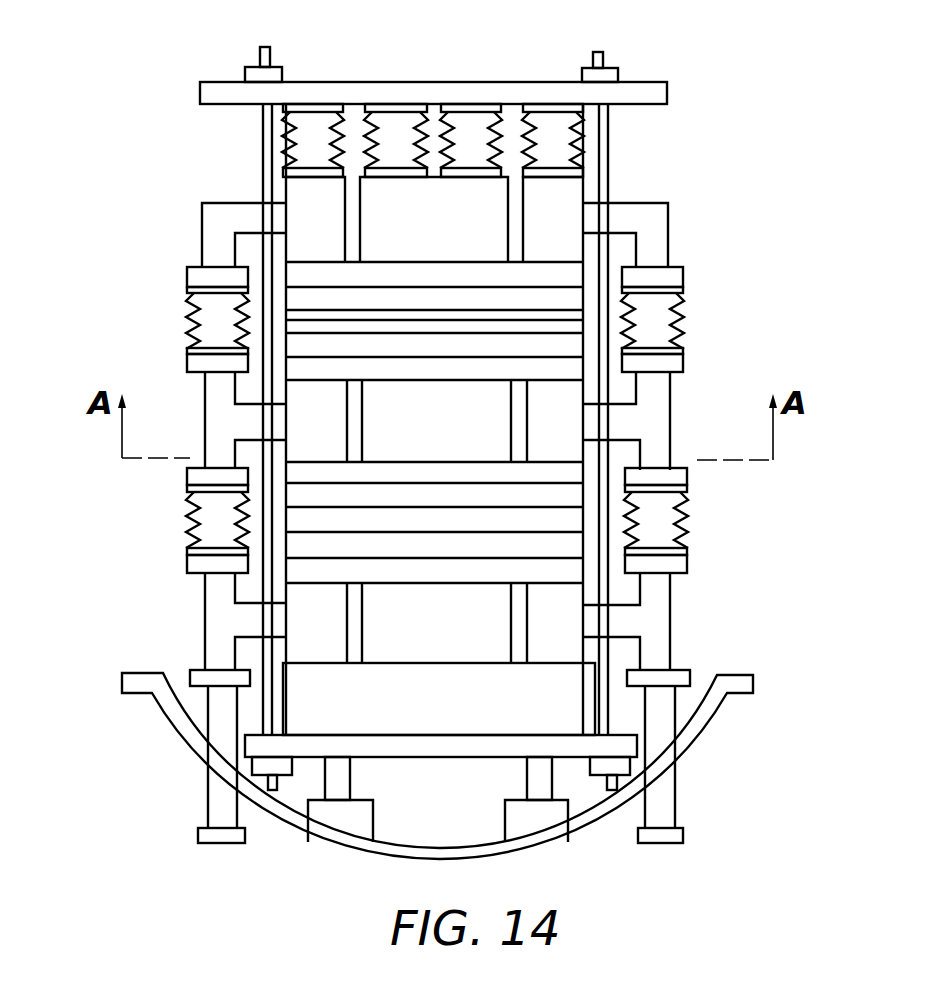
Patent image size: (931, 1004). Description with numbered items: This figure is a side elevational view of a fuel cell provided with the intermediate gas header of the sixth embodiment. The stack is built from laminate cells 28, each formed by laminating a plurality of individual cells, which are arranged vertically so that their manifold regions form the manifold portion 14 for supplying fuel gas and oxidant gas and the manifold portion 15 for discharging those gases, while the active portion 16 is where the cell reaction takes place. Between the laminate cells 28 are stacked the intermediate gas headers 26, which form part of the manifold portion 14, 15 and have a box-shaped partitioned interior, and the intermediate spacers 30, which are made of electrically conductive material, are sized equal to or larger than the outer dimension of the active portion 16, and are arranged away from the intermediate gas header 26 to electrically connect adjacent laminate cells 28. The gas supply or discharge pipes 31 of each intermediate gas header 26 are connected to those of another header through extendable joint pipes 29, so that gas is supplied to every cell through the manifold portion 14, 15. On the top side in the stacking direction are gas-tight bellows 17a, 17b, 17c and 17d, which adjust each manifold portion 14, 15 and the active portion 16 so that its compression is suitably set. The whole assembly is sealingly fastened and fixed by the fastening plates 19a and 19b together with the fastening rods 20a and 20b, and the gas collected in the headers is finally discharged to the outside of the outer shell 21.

The manifold portion 14 is at (365, 315).
The manifold portion 15 is at (562, 325).
The active portion 16 is at (442, 302).
The gas-tight bellows 17a is at (395, 125).
The gas-tight bellows 17b is at (556, 128).
The gas-tight bellows 17c is at (308, 125).
The gas-tight bellows 17d is at (468, 125).
The fastening plate 19a is at (445, 757).
The fastening plate 19b is at (647, 92).
The fastening rod 20a is at (608, 148).
The fastening rod 20b is at (265, 150).
The outer shell 21 is at (710, 725).
The intermediate gas header 26 is at (308, 397).
The laminate cell 28 is at (552, 520).
The extendable joint pipe 29 is at (195, 310).
The intermediate spacer 30 is at (490, 435).
The gas supply pipe 31 is at (220, 423).